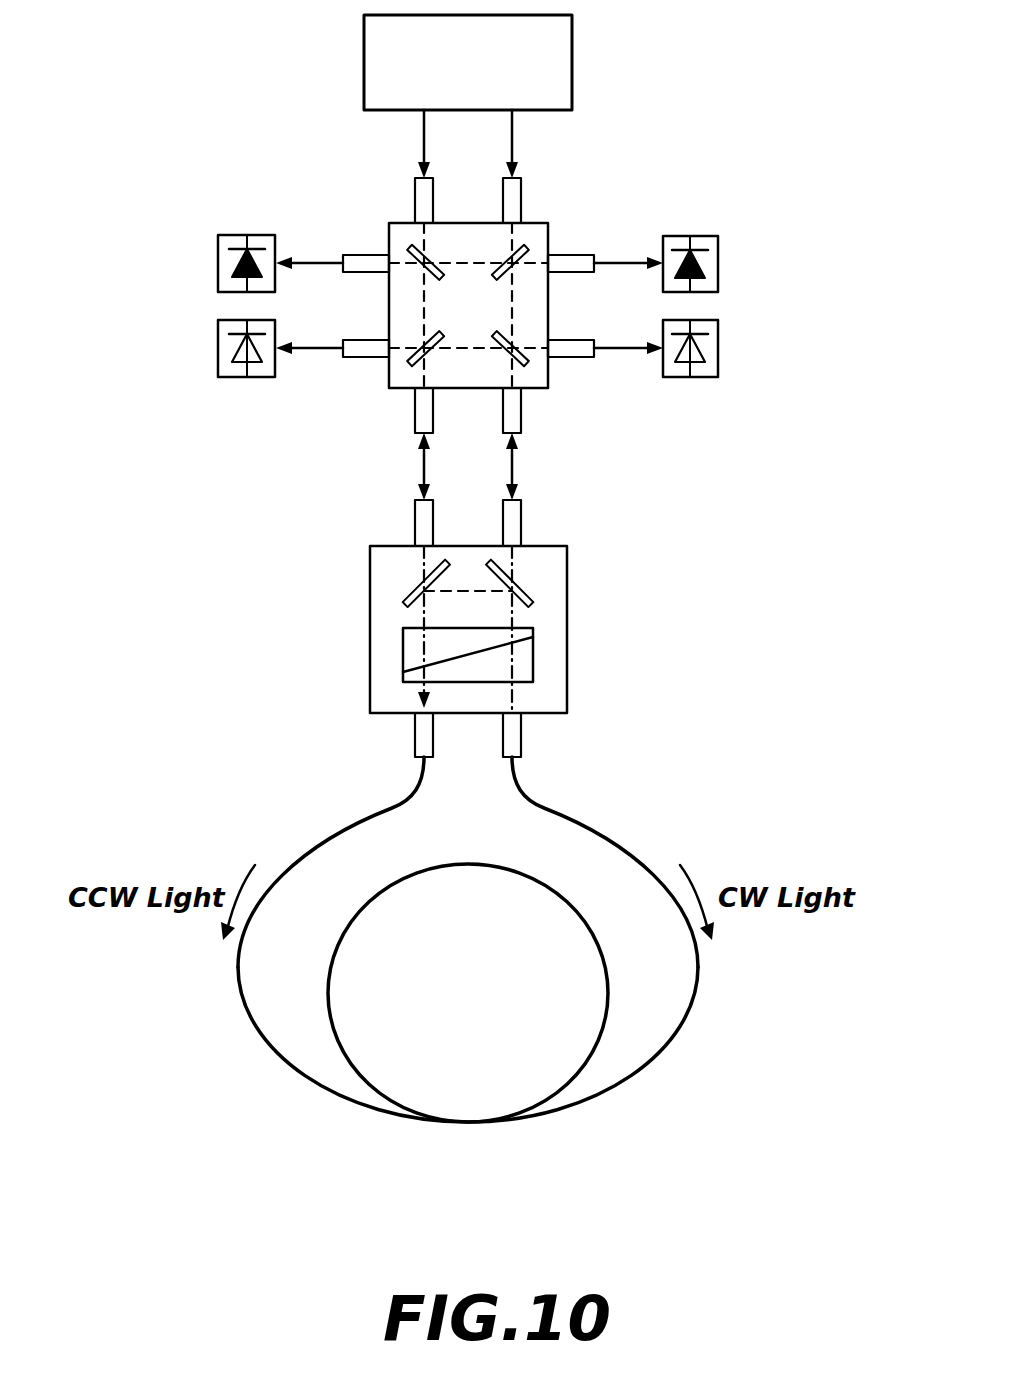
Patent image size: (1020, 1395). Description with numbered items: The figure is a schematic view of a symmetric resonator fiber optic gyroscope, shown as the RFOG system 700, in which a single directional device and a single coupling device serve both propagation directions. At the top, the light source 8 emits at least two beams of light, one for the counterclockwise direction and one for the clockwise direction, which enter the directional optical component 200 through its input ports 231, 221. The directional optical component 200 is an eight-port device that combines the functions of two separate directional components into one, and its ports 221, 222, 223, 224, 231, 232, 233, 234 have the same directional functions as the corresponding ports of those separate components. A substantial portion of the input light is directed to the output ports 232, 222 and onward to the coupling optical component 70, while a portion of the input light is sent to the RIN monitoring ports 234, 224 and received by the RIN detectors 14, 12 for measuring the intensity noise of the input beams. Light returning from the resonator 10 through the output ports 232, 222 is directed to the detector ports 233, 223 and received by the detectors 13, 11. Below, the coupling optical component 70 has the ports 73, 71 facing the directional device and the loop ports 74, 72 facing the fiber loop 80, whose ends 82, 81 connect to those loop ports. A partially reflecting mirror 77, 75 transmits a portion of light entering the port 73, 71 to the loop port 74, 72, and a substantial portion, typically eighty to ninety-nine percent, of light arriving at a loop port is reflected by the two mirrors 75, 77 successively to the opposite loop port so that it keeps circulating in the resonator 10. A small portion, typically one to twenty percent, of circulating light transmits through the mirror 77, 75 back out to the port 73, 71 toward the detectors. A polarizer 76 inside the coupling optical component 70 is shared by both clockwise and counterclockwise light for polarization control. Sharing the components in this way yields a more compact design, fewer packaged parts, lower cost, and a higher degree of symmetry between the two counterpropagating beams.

The light source 8 is at (572, 43).
The RFOG system 700 is at (733, 124).
The directional optical component 200 is at (548, 223).
The port 231 is at (415, 202).
The port 221 is at (521, 198).
The port 232 is at (415, 412).
The port 222 is at (521, 410).
The port 233 is at (357, 255).
The port 234 is at (357, 357).
The port 223 is at (578, 255).
The port 224 is at (578, 357).
The detector 13 is at (218, 270).
The RIN detector 14 is at (218, 355).
The detector 11 is at (718, 259).
The RIN detector 12 is at (718, 353).
The coupling optical component 70 is at (567, 630).
The partially reflecting mirror 77 is at (407, 600).
The partially reflecting mirror 75 is at (530, 598).
The polarizer 76 is at (533, 662).
The port 73 is at (415, 524).
The port 71 is at (521, 524).
The loop port 74 is at (415, 732).
The loop port 72 is at (521, 732).
The end 82 is at (412, 790).
The end 81 is at (526, 790).
The fiber loop 80 is at (571, 912).
The resonator 10 is at (721, 1138).